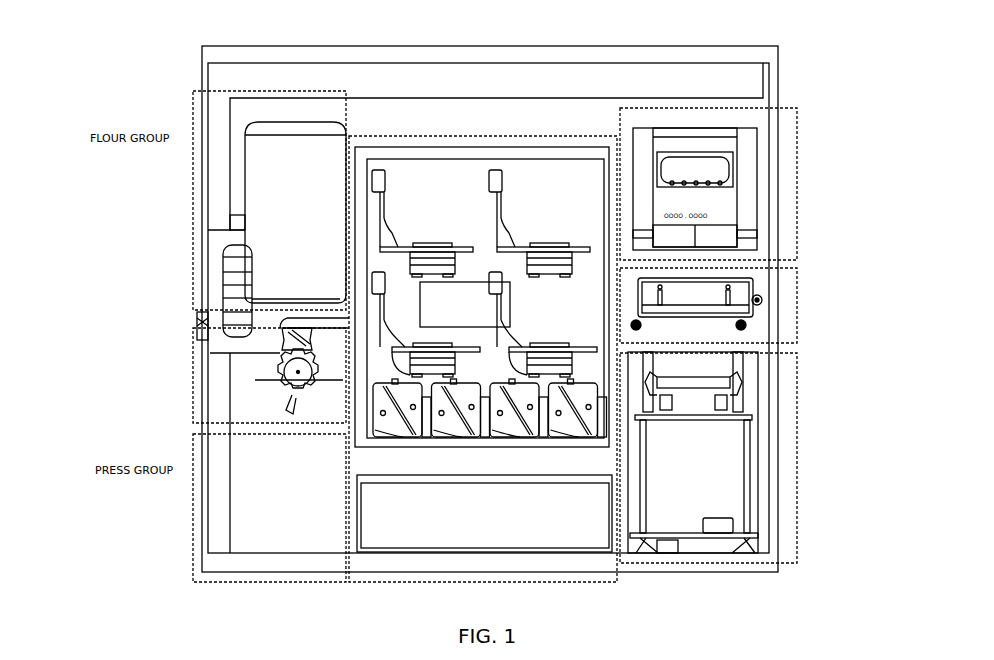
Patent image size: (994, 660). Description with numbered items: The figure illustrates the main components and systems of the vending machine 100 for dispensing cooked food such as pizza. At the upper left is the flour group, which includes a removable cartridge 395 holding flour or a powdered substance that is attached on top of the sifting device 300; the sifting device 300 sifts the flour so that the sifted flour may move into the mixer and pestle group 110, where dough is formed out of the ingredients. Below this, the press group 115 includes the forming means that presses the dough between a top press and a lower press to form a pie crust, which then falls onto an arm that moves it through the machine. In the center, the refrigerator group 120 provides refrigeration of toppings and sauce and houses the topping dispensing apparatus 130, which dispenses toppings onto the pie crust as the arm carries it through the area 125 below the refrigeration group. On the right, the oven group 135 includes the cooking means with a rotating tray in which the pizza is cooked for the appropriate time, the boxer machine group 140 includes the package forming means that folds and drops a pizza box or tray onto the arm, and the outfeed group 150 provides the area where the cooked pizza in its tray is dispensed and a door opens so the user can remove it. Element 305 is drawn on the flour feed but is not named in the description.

The vending machine 100 is at (88, 87).
The mixer and pestle group 110 is at (182, 325).
The press group 115 is at (180, 388).
The refrigerator group 120 is at (394, 118).
The area below the refrigeration group 125 is at (402, 458).
The topping dispensing apparatus 130 is at (677, 545).
The oven group 135 is at (760, 124).
The boxer machine group 140 is at (768, 486).
The outfeed group 150 is at (768, 316).
The sifting device 300 is at (220, 233).
The flour feed pipe 305 is at (242, 280).
The removable cartridge 395 is at (245, 177).